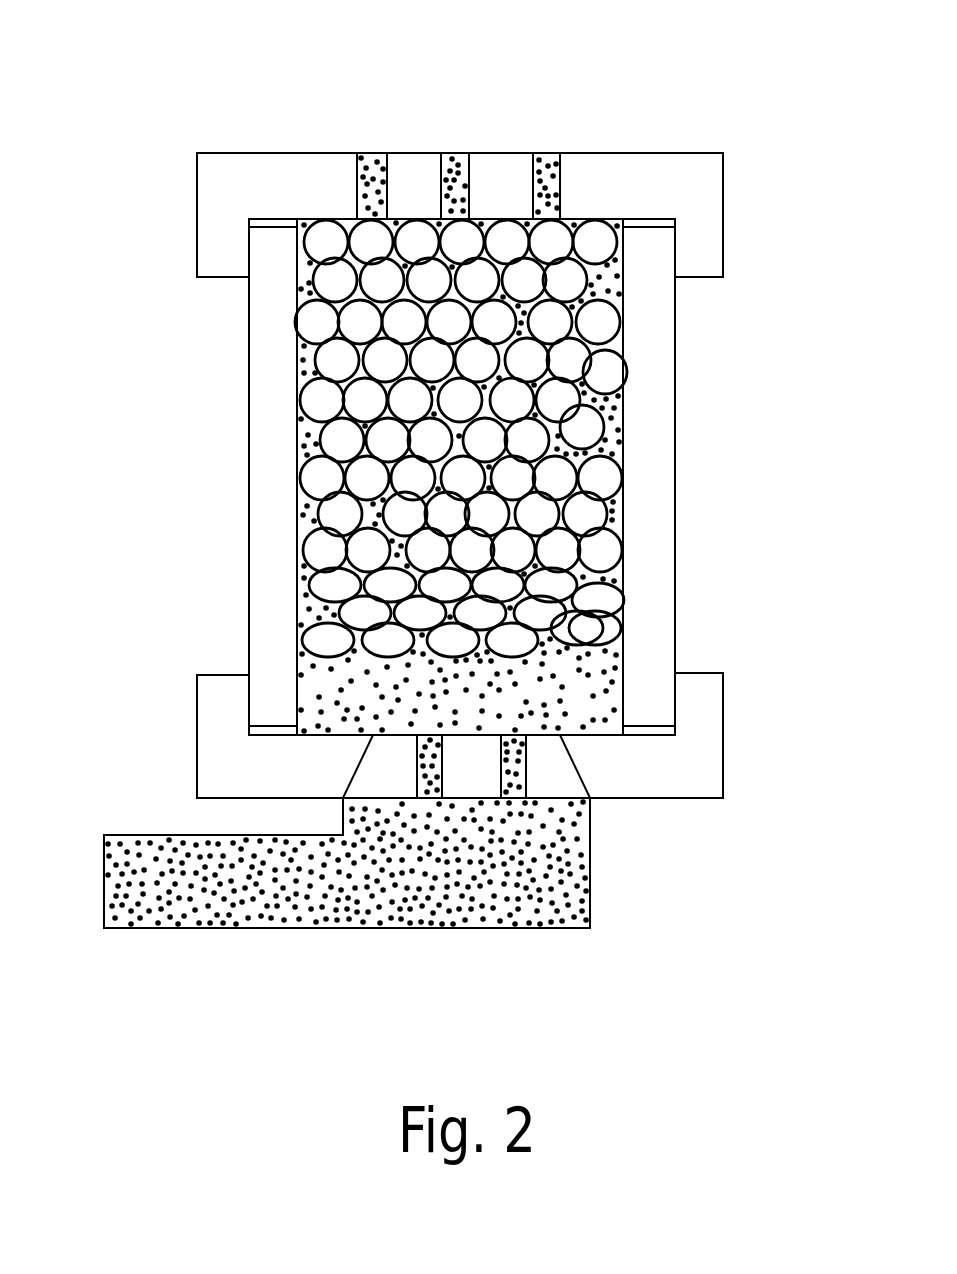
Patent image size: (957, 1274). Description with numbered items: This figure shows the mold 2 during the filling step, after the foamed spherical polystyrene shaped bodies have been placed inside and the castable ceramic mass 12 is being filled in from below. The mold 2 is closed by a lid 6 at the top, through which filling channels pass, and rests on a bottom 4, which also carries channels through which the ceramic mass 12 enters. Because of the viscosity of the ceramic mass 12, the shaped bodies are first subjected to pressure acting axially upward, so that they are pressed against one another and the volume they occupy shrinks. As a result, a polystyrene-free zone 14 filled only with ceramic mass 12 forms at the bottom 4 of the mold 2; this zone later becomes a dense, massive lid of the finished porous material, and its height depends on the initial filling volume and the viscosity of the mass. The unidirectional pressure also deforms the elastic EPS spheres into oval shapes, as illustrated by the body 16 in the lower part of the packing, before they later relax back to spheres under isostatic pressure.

The mold 2 is at (273, 402).
The bottom 4 is at (660, 766).
The lid 6 is at (299, 180).
The ceramic mass 12 is at (615, 350).
The polystyrene-free zone 14 is at (525, 683).
The body 16 is at (330, 638).